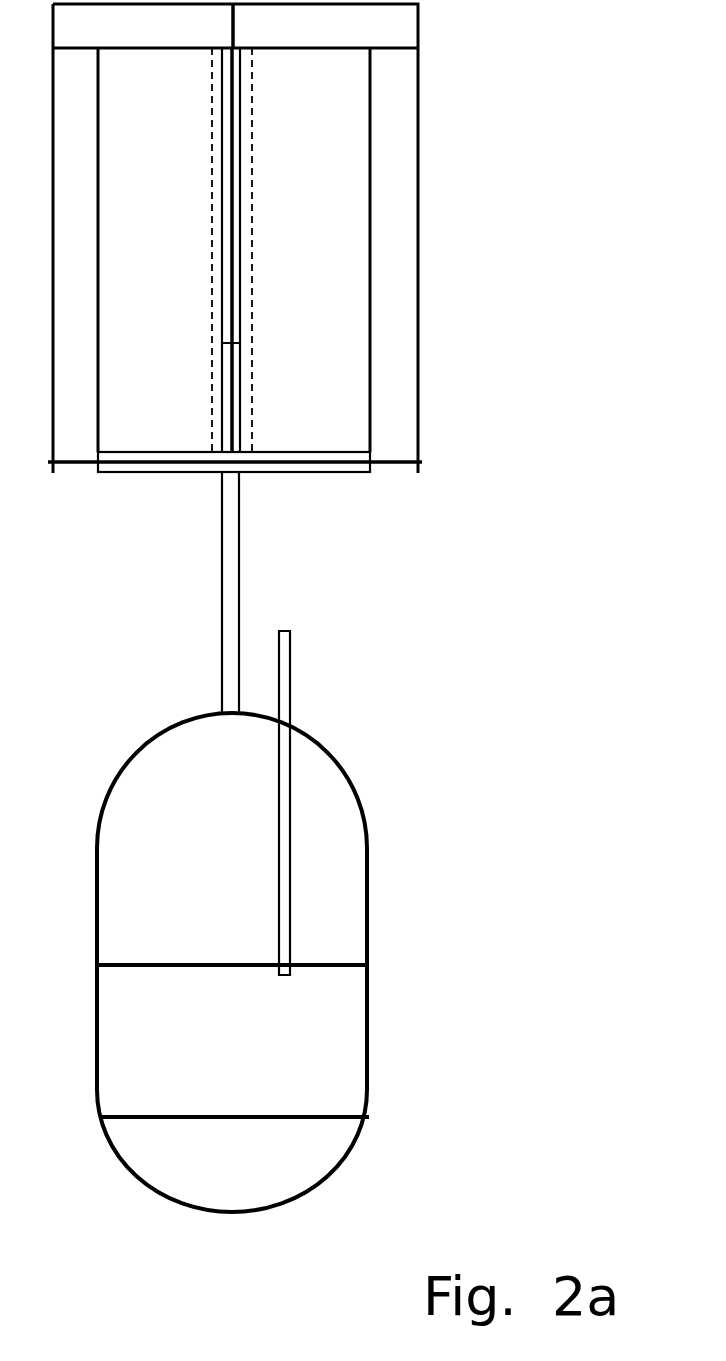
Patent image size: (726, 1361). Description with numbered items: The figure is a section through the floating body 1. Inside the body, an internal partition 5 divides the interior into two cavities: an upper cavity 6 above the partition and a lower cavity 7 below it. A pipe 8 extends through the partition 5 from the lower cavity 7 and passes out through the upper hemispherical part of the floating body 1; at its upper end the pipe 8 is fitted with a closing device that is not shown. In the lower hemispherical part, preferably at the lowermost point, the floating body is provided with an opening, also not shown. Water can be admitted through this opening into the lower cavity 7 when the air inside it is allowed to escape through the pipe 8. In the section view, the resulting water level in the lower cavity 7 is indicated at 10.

The floating body 1 is at (357, 790).
The partition 5 is at (328, 957).
The upper cavity 6 is at (340, 853).
The lower cavity 7 is at (343, 1052).
The pipe 8 is at (287, 697).
The water level 10 is at (215, 1110).